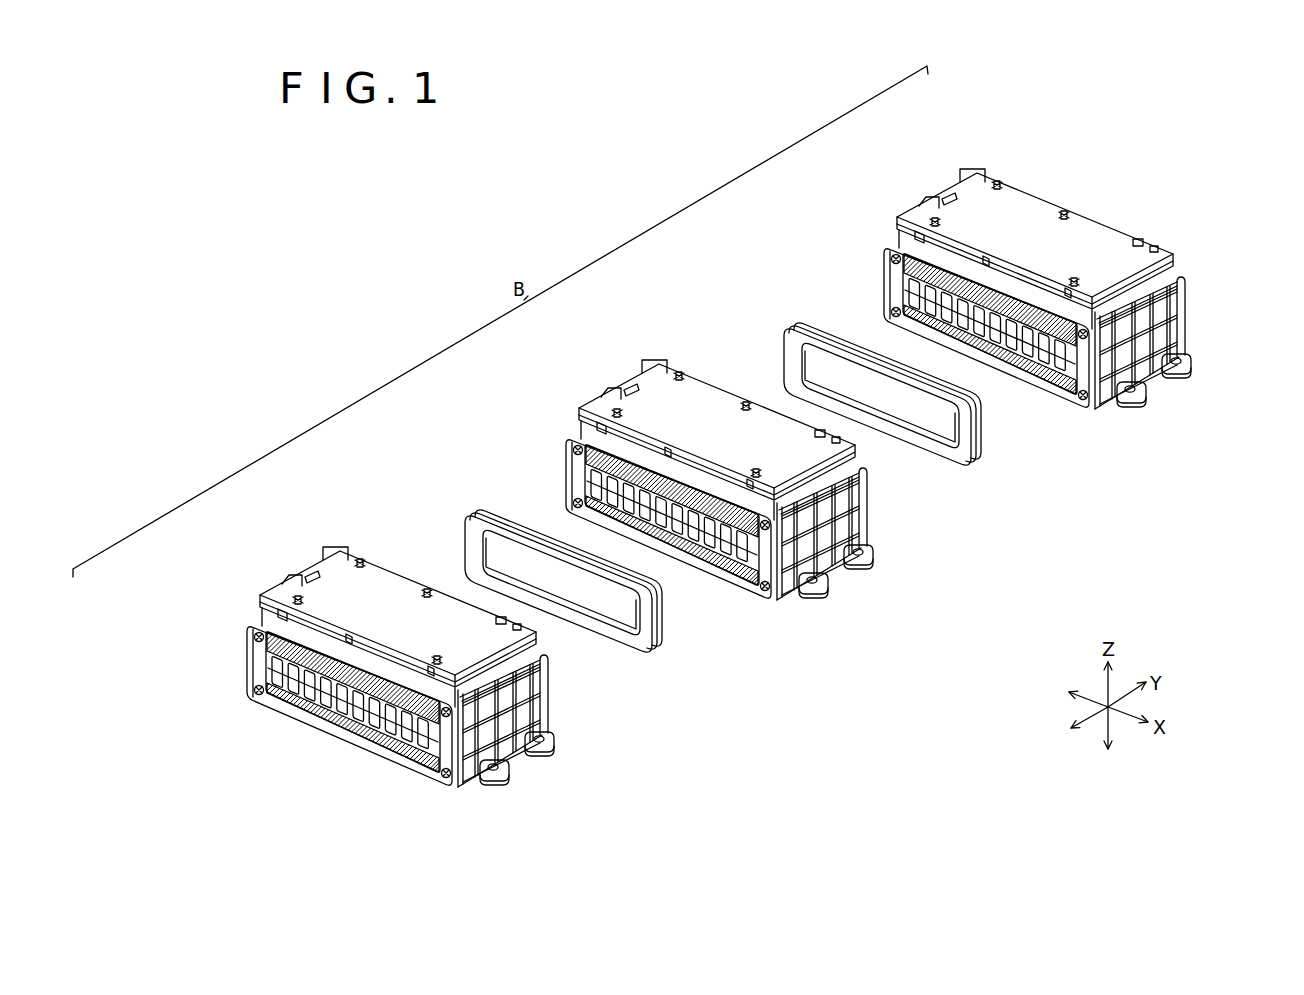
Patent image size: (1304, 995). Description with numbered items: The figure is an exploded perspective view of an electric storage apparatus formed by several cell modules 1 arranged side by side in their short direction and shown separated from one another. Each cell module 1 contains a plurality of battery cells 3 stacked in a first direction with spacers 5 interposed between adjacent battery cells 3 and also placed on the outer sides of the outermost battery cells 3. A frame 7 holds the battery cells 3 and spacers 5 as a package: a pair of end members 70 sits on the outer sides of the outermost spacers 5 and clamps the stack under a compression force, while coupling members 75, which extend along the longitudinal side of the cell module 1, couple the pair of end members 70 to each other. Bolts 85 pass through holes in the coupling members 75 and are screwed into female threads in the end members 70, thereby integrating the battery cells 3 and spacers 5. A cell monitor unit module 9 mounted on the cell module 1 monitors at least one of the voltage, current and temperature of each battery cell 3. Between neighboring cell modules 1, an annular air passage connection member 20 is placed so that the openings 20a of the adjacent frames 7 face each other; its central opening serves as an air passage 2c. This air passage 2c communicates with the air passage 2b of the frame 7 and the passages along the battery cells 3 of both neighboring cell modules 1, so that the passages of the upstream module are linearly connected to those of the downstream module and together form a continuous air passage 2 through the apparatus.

The cell module 1 is at (702, 474).
The continuous air passage 2 is at (668, 545).
The air passage of the frame 2b is at (671, 538).
The air passage 2c is at (721, 519).
The battery cell 3 is at (655, 507).
The spacer 5 is at (671, 541).
The frame 7 is at (702, 518).
The cell monitor unit module 9 is at (716, 398).
The air passage connection member 20 is at (703, 471).
The opening 20a is at (729, 572).
The end member 70 is at (861, 580).
The coupling member 75 is at (625, 511).
The bolt 85 is at (638, 516).